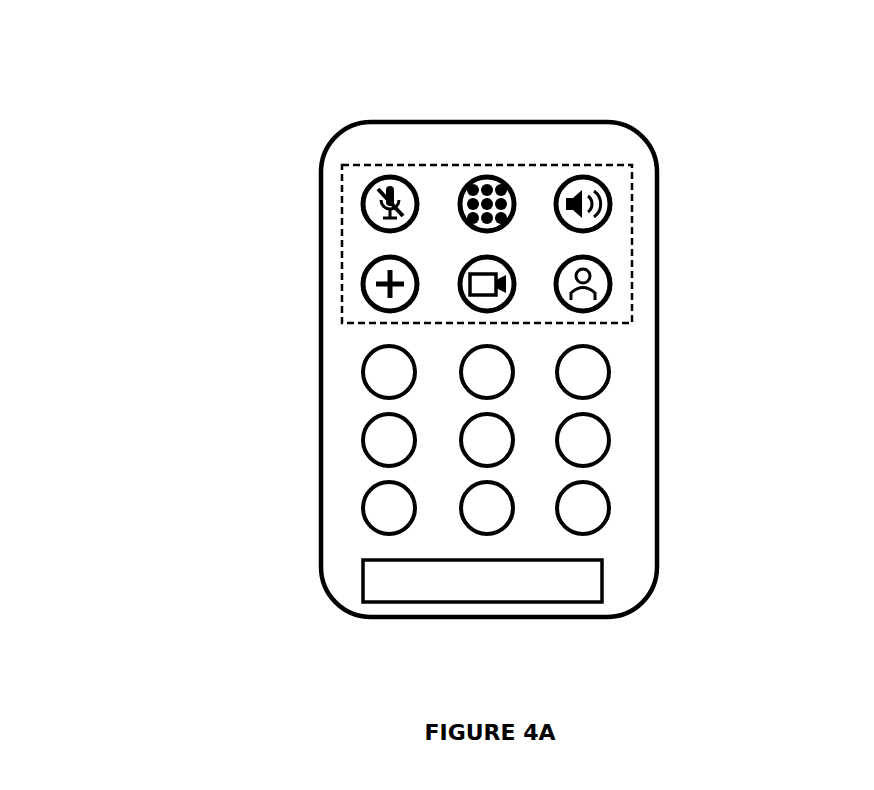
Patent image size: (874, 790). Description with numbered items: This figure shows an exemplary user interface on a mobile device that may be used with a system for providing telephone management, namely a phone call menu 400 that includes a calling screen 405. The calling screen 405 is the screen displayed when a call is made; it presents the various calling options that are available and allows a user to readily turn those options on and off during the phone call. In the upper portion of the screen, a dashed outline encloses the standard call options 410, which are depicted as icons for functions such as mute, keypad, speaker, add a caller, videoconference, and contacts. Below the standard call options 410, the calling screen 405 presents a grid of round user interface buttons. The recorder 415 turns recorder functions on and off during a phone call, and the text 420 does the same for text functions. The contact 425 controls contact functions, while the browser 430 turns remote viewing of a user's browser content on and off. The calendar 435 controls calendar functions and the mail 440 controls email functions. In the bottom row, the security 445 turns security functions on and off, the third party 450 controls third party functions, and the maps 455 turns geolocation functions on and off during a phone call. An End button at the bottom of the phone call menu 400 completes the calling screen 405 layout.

The phone call menu 400 is at (512, 98).
The calling screen 405 is at (350, 121).
The standard call options 410 is at (640, 165).
The recorder 415 is at (362, 372).
The text 420 is at (507, 351).
The contact 425 is at (610, 374).
The browser 430 is at (362, 440).
The calendar 435 is at (510, 432).
The mail 440 is at (610, 443).
The security 445 is at (362, 508).
The third party 450 is at (512, 500).
The maps 455 is at (608, 518).